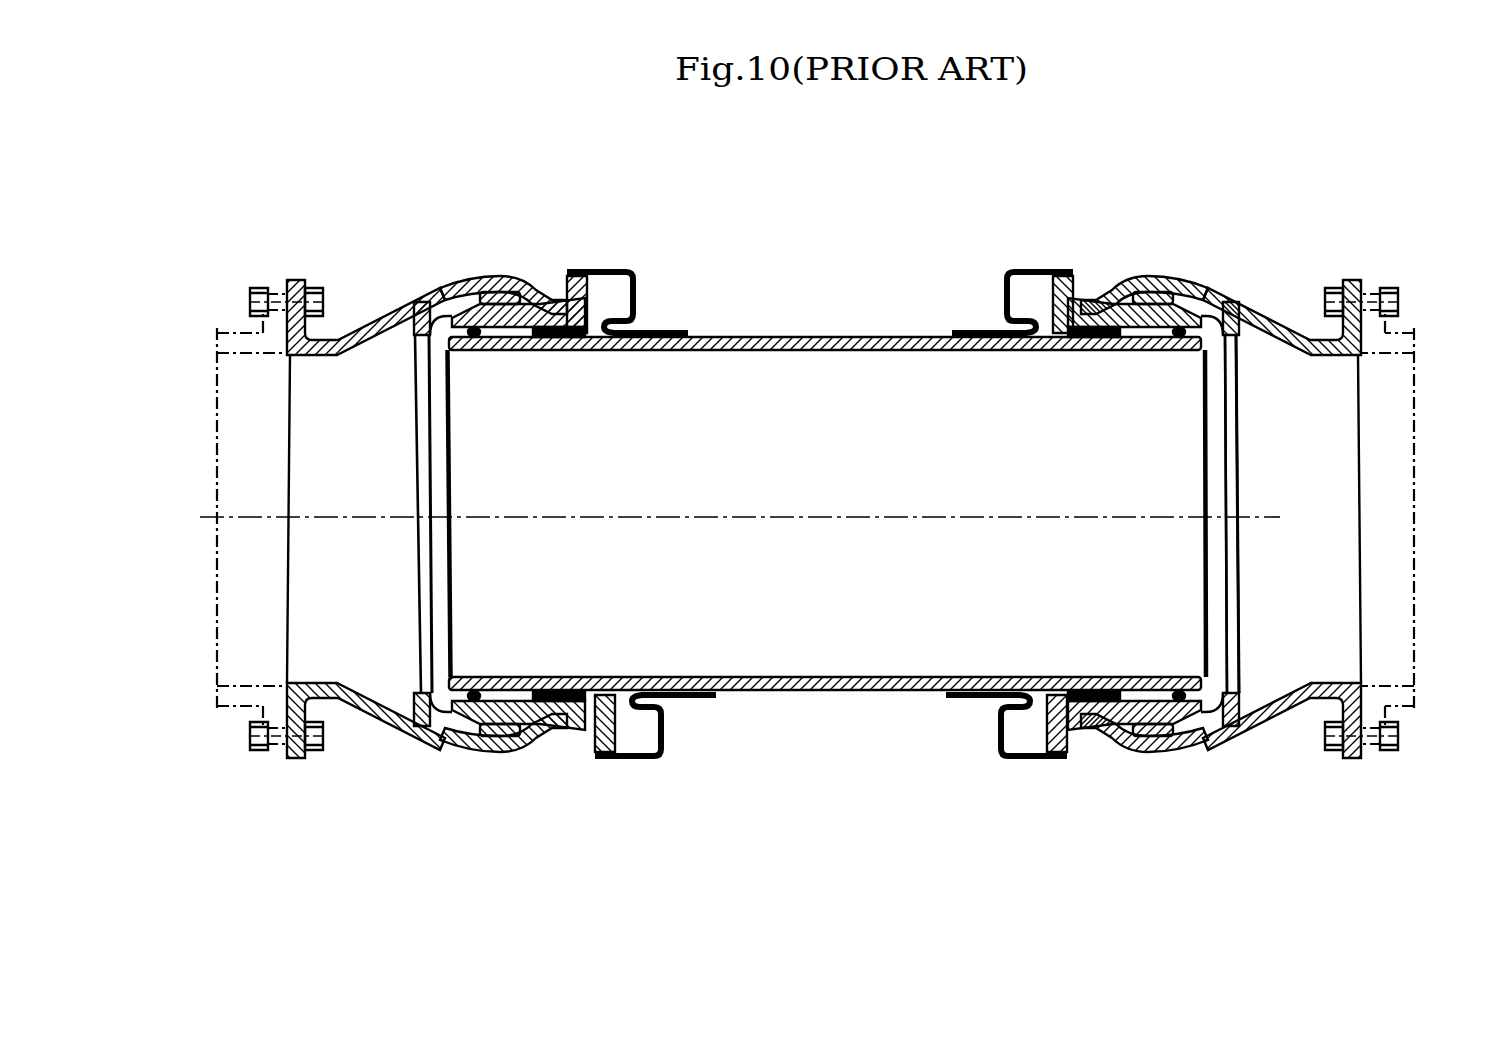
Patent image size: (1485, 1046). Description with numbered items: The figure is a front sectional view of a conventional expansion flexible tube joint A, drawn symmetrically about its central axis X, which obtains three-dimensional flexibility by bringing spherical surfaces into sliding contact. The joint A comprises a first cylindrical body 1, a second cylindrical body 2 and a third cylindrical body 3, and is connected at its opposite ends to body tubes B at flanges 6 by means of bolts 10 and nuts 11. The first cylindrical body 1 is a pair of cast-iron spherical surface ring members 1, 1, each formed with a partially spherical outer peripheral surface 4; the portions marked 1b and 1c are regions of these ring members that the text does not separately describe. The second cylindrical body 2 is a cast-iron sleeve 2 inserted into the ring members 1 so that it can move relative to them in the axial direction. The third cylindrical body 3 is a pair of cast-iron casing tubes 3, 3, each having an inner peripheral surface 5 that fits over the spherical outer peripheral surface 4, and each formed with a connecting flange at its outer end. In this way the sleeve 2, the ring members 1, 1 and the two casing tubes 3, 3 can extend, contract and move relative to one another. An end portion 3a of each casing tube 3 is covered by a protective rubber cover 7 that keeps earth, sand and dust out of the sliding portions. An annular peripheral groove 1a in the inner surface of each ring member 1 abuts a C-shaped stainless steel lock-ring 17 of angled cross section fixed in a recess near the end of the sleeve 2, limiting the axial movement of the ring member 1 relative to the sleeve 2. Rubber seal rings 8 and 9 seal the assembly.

The first cylindrical body 1 is at (413, 372).
The annular peripheral groove 1a is at (502, 328).
The outer portion of tubular body 1b is at (1260, 514).
The bent portion of tubular body 1c is at (1150, 316).
The second cylindrical body 2 is at (848, 335).
The third cylindrical body 3 is at (510, 300).
The end portion 3a is at (578, 270).
The partially spherical outer peripheral surface 4 is at (448, 290).
The inner peripheral surface 5 is at (395, 330).
The flange 6 is at (300, 278).
The protective rubber cover 7 is at (630, 270).
The rubber seal ring 8 is at (557, 353).
The rubber seal ring 9 is at (500, 290).
The bolt 10 is at (323, 292).
The nut 11 is at (258, 285).
The lock-ring 17 is at (476, 340).
The expansion flexible tube joint A is at (985, 191).
The body tube B is at (215, 335).
The axis X is at (752, 508).